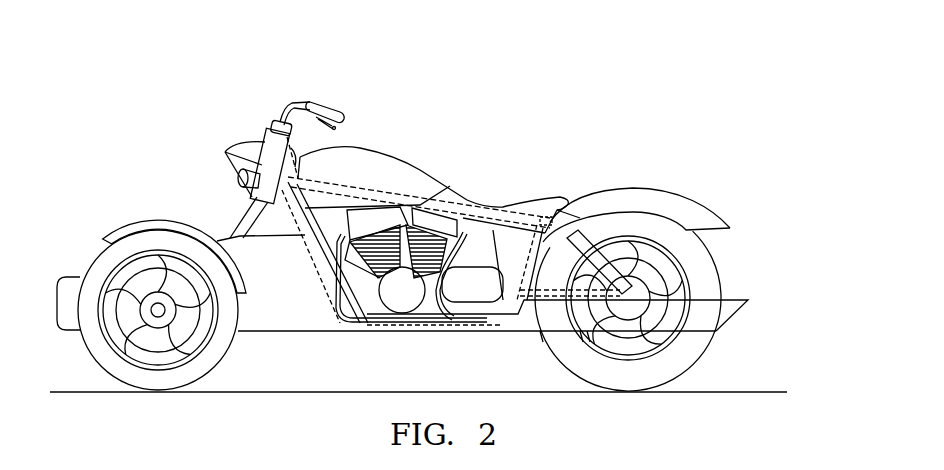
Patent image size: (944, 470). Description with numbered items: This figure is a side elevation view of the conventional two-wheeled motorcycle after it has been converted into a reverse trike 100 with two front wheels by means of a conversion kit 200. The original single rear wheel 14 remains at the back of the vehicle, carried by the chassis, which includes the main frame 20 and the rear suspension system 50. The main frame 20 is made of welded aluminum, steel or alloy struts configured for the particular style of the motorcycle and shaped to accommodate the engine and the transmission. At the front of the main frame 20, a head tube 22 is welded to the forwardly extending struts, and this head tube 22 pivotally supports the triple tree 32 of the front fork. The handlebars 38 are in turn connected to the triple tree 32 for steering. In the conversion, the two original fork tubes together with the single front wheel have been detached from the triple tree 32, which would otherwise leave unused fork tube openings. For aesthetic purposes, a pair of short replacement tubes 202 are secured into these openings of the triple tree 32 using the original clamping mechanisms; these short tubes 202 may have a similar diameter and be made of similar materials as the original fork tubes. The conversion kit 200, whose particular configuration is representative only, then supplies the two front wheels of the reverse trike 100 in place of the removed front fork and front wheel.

The reverse trike 100 is at (258, 67).
The rear wheel 14 is at (727, 264).
The main frame 20 is at (365, 188).
The head tube 22 is at (253, 160).
The triple tree 32 is at (268, 122).
The handlebars 38 is at (300, 97).
The rear suspension system 50 is at (630, 268).
The conversion kit 200 is at (134, 197).
The short replacement tubes 202 is at (262, 160).